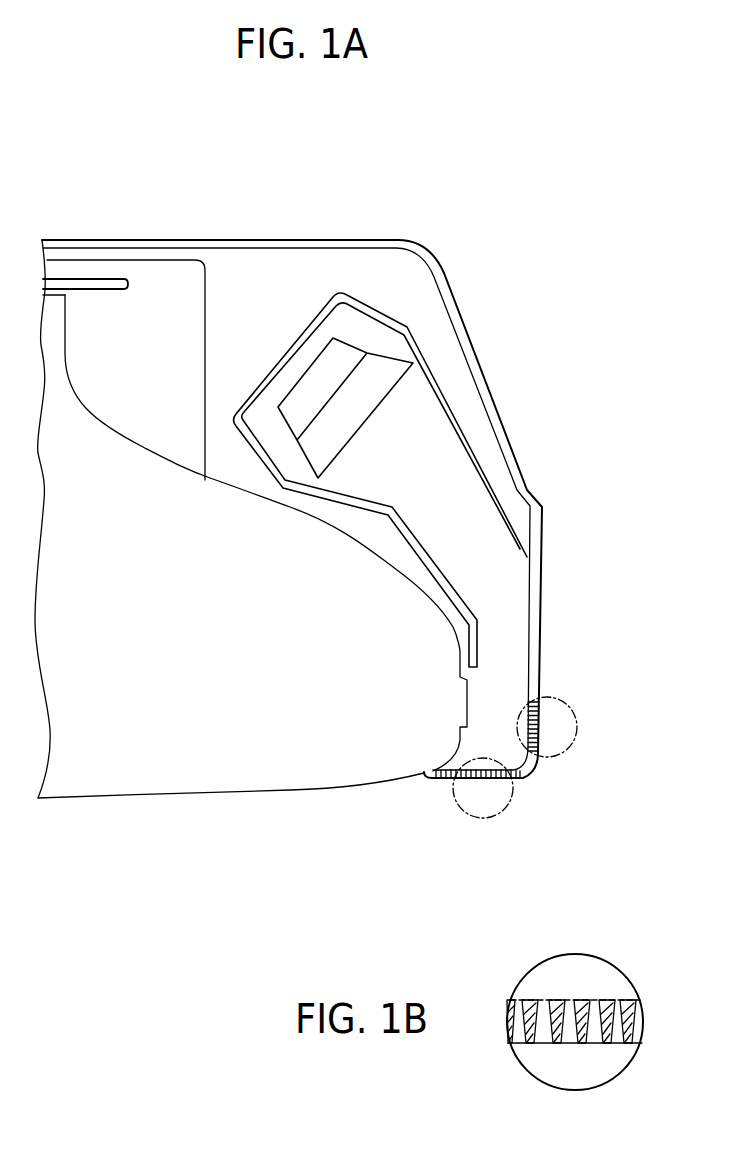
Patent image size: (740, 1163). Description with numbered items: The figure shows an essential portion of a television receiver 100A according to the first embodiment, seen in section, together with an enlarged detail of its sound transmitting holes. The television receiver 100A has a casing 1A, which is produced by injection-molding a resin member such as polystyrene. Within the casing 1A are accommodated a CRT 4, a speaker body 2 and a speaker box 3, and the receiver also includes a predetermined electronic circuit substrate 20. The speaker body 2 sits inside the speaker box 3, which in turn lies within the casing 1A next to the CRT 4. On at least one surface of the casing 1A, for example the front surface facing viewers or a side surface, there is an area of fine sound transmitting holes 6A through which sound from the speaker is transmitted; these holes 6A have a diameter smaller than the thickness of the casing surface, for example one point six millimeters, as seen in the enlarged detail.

In FIG. 1A, the casing 1A is at (543, 611).
In FIG. 1A, the speaker body 2 is at (380, 412).
In FIG. 1A, the speaker box 3 is at (382, 310).
In FIG. 1A, the CRT 4 is at (287, 783).
In FIG. 1A, the electronic circuit substrate 20 is at (207, 293).
In FIG. 1A, the television receiver 100A is at (325, 588).
In FIG. 1B, the sound transmitting holes 6A is at (593, 1003).